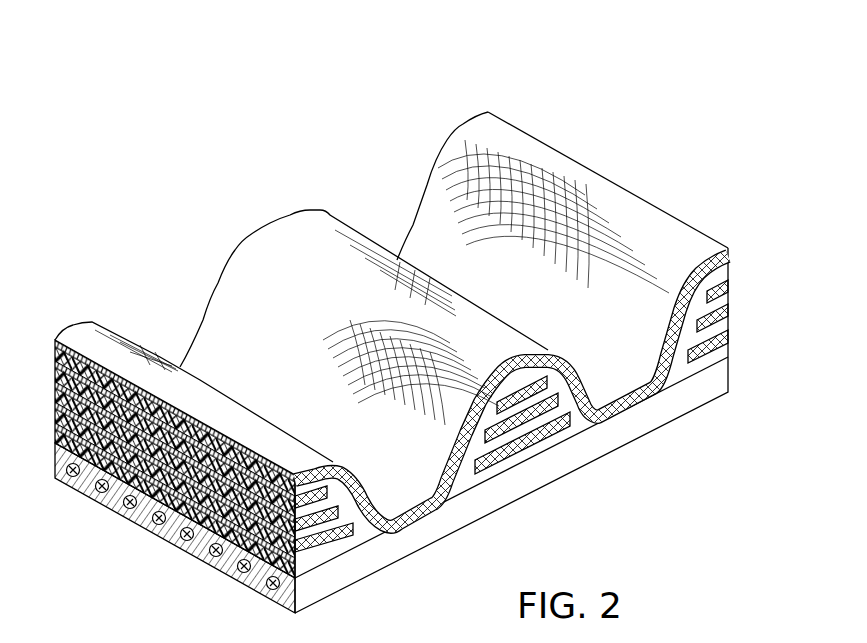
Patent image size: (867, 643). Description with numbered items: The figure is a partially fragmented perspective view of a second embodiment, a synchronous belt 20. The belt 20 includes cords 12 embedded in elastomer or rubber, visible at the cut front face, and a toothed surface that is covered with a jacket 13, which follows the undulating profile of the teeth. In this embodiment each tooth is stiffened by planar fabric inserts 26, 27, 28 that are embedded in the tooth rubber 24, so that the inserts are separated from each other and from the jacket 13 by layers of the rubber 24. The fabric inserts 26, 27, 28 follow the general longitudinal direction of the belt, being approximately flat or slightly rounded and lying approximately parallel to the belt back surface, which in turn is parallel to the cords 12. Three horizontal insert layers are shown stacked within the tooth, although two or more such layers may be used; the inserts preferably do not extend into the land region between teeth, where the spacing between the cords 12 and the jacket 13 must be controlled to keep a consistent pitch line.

The synchronous belt 20 is at (542, 82).
The cords 12 is at (112, 511).
The jacket 13 is at (677, 237).
The tooth rubber 24 is at (348, 513).
The fabric insert 26 is at (536, 393).
The fabric insert 27 is at (521, 425).
The fabric insert 28 is at (490, 466).